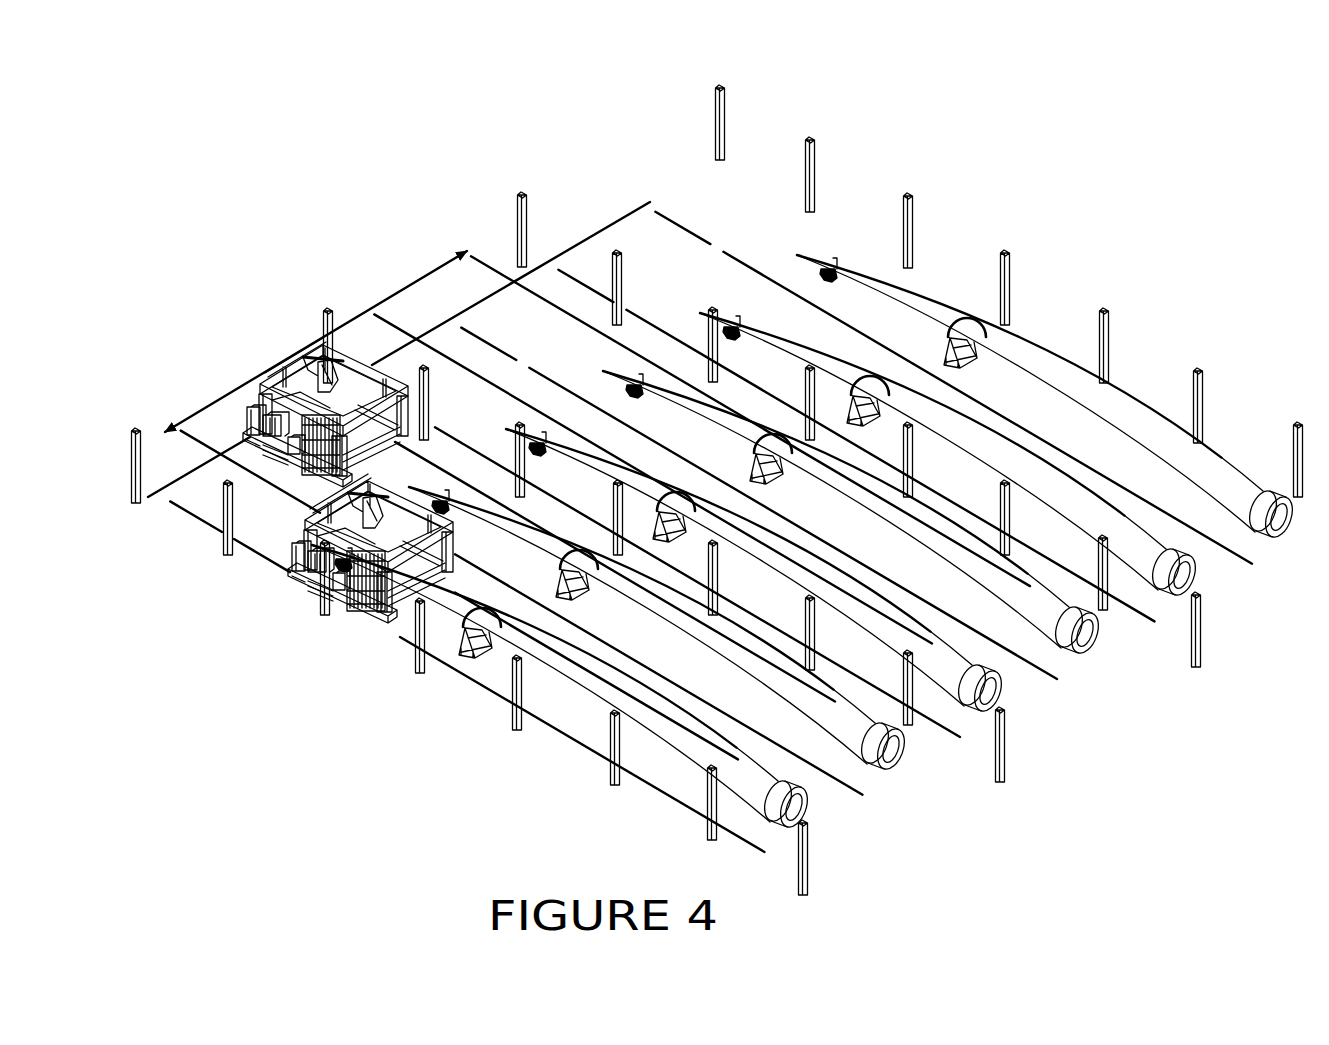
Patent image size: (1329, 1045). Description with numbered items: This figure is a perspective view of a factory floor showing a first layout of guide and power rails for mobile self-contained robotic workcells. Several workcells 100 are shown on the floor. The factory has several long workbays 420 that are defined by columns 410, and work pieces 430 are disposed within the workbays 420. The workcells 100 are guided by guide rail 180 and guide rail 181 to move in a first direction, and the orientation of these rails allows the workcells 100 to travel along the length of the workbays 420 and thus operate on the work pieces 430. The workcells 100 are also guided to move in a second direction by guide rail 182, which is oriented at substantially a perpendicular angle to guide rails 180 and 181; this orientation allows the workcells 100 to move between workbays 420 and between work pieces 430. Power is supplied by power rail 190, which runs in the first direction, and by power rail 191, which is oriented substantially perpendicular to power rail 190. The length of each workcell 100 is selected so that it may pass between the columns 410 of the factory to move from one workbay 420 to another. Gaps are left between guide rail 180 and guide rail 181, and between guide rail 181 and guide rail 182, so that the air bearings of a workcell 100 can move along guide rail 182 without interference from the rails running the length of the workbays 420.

The workcell 100 is at (296, 345).
The guide rail 180 is at (557, 400).
The guide rail 181 is at (505, 355).
The guide rail 182 is at (587, 236).
The power rail 190 is at (193, 433).
The power rail 191 is at (192, 422).
The column 410 is at (1198, 383).
The workbay 420 is at (817, 890).
The work piece 430 is at (1033, 598).